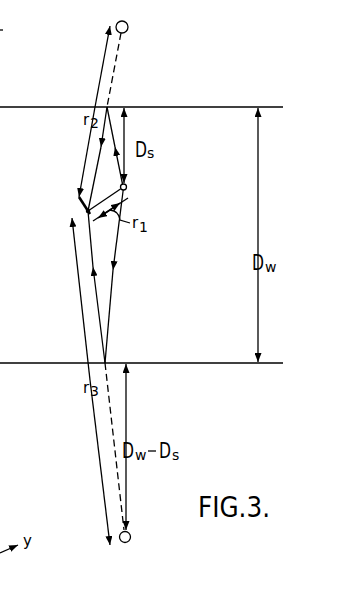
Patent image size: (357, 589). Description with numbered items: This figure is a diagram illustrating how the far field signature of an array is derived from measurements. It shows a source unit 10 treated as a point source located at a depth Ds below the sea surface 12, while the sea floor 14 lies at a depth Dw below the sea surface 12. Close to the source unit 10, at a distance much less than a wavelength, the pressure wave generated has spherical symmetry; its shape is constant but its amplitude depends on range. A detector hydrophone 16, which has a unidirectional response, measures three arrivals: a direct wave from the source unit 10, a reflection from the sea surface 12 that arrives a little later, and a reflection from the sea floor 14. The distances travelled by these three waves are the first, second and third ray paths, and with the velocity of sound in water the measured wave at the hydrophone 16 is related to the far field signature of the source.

The source unit 10 is at (127, 186).
The sea surface 12 is at (245, 107).
The sea floor 14 is at (228, 363).
The detector hydrophone 16 is at (74, 199).